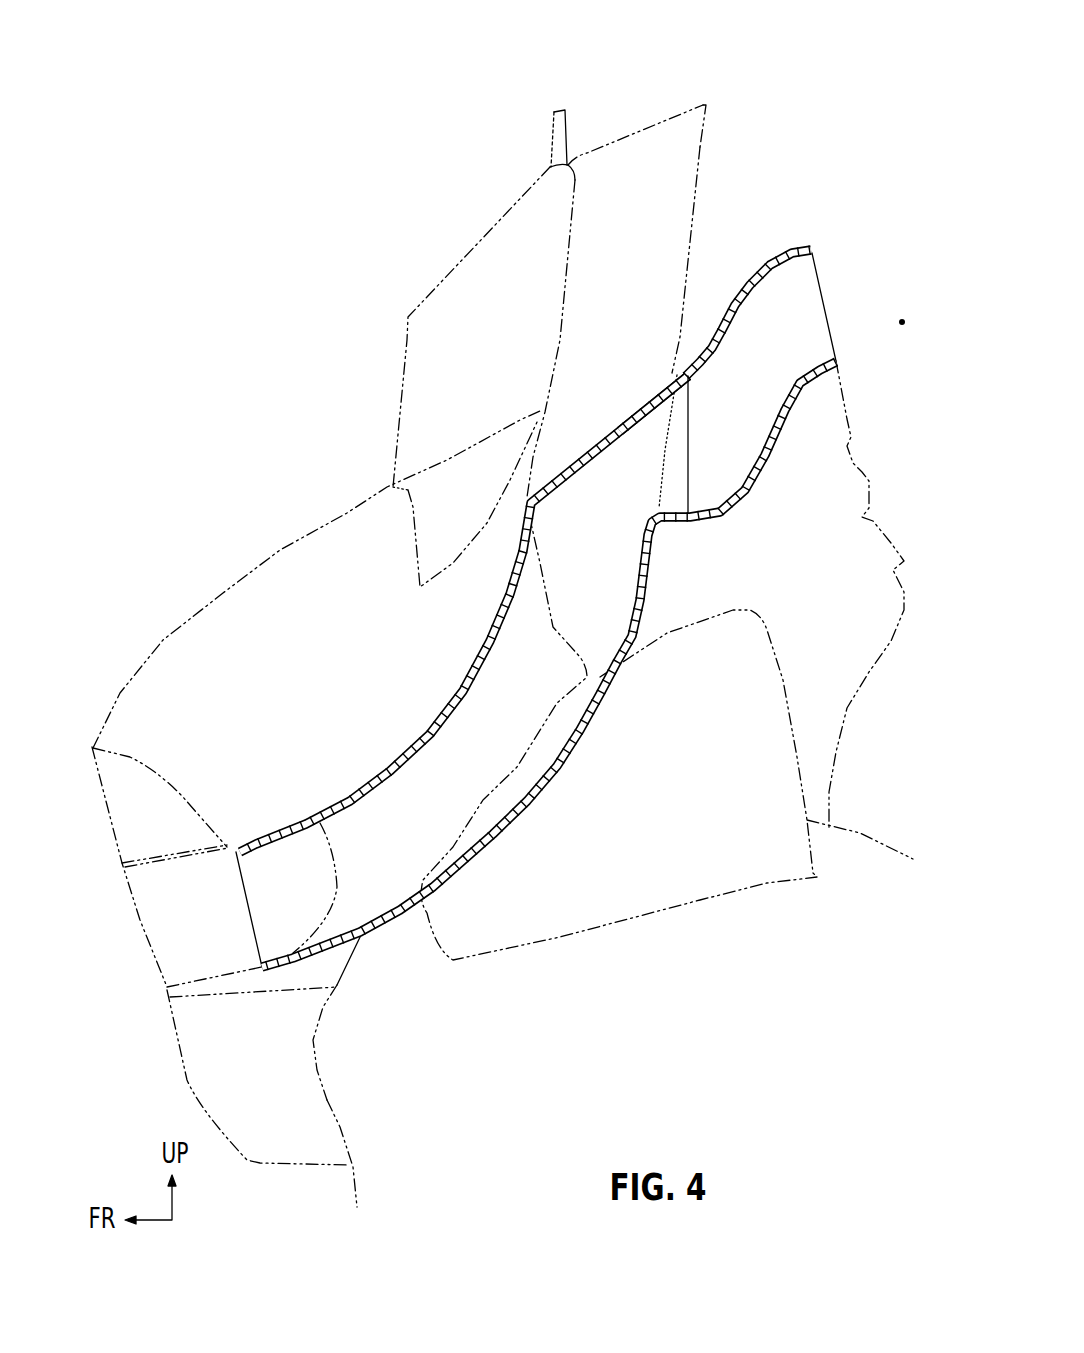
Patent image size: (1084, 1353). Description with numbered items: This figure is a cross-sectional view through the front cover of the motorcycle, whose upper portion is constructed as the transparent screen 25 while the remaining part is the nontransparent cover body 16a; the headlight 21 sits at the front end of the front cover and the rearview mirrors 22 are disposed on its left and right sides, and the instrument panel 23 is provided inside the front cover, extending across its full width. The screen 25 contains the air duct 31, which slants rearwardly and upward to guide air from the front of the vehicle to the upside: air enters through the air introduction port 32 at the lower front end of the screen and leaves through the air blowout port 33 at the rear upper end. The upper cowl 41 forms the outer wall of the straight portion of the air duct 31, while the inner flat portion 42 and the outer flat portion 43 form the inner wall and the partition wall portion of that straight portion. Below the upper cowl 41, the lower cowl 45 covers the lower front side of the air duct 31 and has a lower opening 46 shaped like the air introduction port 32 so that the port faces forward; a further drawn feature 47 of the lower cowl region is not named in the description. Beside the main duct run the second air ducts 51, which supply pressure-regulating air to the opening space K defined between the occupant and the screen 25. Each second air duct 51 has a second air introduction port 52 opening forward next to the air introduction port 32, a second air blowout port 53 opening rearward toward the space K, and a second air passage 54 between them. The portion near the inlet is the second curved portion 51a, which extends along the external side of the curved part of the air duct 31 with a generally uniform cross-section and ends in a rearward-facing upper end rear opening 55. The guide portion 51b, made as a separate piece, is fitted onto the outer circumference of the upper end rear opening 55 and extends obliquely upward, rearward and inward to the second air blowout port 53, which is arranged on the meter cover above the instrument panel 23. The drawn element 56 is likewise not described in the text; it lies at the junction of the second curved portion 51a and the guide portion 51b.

The cover body 16a is at (338, 1130).
The headlight 21 is at (200, 1077).
The rearview mirrors 22 is at (690, 880).
The instrument panel 23 is at (865, 464).
The screen 25 is at (356, 228).
The air duct 31 is at (710, 102).
The air introduction port 32 is at (153, 918).
The air blowout port 33 is at (649, 150).
The upper cowl 41 is at (404, 346).
The inner flat portion 42 is at (702, 147).
The outer flat portion 43 is at (553, 137).
The lower cowl 45 is at (270, 567).
The lower opening 46 is at (160, 773).
The lower rear portion 47 is at (333, 857).
The second air ducts 51 is at (464, 614).
The second curved portion 51a is at (478, 855).
The guide portion 51b is at (761, 274).
The second air introduction port 52 is at (263, 902).
The second air blowout port 53 is at (824, 307).
The second air passage 54 is at (600, 578).
The upper end rear opening 55 is at (679, 512).
The inclined portion 56 is at (638, 408).
The opening space K is at (902, 322).